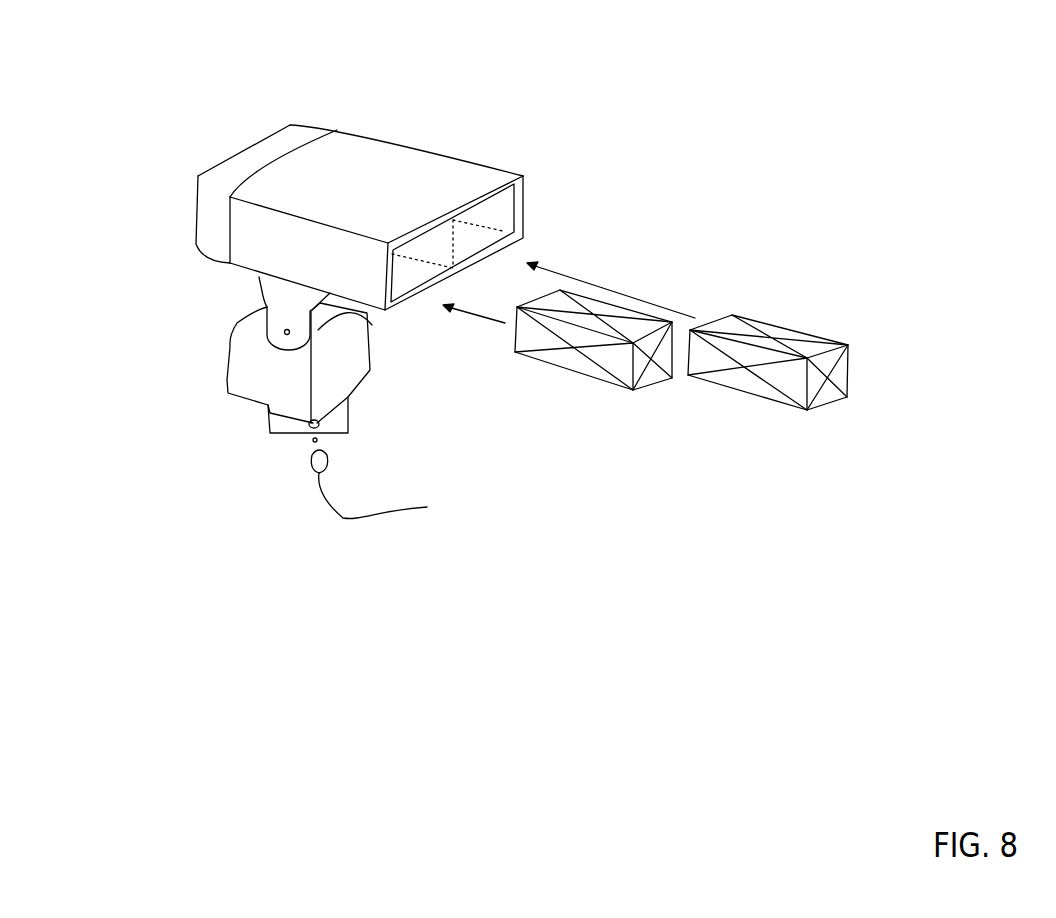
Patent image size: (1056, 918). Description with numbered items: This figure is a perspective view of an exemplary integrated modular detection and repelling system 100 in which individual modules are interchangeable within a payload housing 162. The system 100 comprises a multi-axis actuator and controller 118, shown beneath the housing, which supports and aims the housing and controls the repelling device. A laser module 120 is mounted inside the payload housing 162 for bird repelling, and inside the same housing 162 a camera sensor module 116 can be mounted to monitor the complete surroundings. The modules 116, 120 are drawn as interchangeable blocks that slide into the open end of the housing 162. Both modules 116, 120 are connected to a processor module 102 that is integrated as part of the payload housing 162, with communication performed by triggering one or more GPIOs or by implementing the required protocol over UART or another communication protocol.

The detection and repelling system 100 is at (816, 67).
The processor module 102 is at (163, 118).
The payload housing 162 is at (512, 46).
The multi-axis actuator and controller 118 is at (56, 465).
The laser module 120 is at (524, 466).
The camera sensor module 116 is at (730, 463).